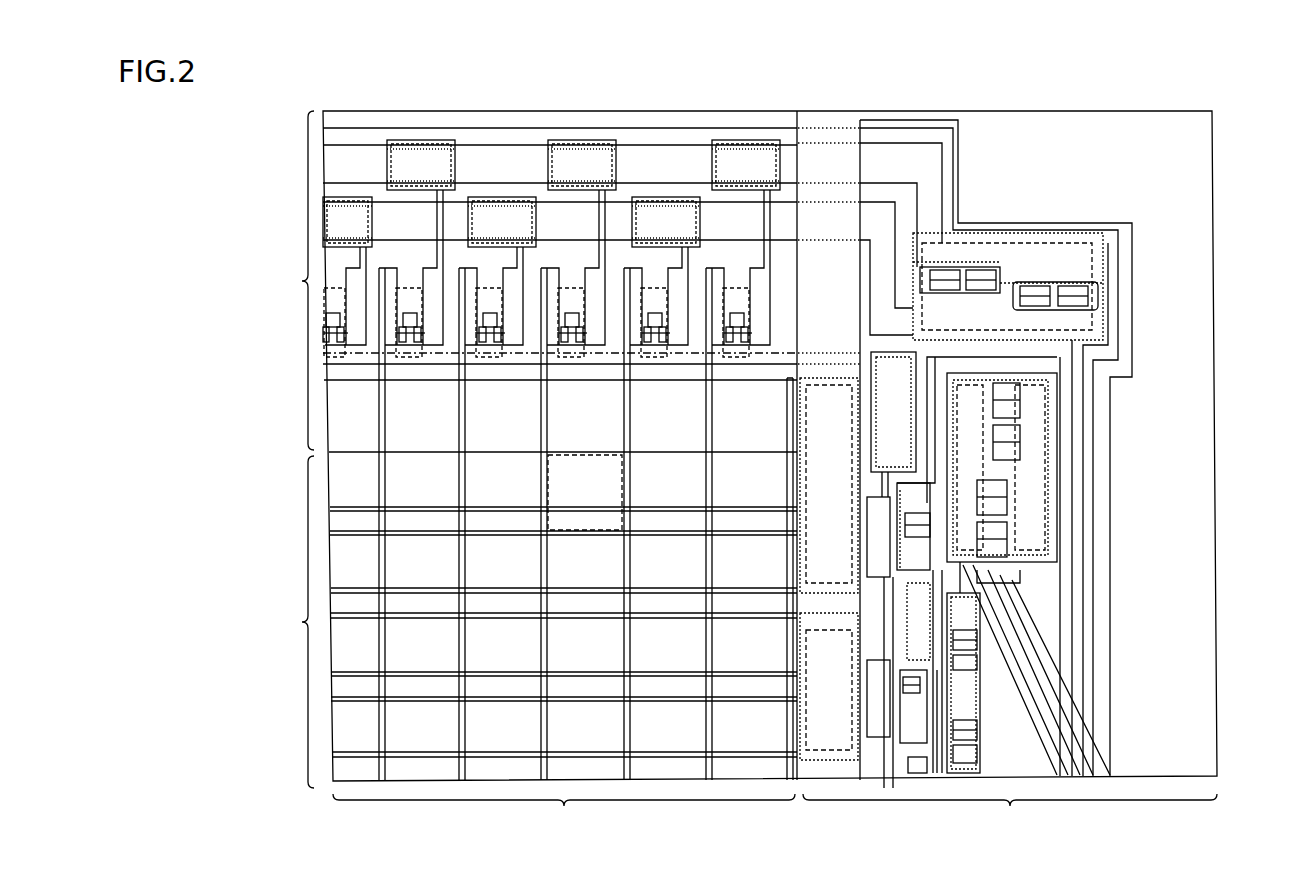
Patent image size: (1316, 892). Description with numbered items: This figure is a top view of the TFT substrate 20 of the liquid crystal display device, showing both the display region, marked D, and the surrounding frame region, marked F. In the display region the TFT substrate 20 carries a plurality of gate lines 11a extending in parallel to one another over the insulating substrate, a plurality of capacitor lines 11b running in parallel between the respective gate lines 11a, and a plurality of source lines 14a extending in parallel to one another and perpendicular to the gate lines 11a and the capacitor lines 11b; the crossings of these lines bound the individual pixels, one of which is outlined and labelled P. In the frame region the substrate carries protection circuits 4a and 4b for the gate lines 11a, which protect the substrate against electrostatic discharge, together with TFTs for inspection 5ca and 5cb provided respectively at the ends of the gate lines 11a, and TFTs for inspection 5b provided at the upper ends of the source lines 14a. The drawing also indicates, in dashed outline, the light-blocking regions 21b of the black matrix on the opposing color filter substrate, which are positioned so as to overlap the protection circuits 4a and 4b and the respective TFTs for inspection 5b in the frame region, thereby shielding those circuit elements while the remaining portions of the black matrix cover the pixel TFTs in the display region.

The TFT substrate 20 is at (763, 451).
The TFT for inspection 5b is at (656, 304).
The light-blocking region 21b is at (734, 288).
The source line 14a is at (384, 487).
The gate line 11a is at (425, 700).
The capacitor line 11b is at (402, 672).
The pixel P is at (585, 455).
The protection circuit 4a is at (1062, 474).
The protection circuit 4b is at (990, 683).
The TFT for inspection 5cb is at (924, 545).
The TFT for inspection 5ca is at (915, 708).